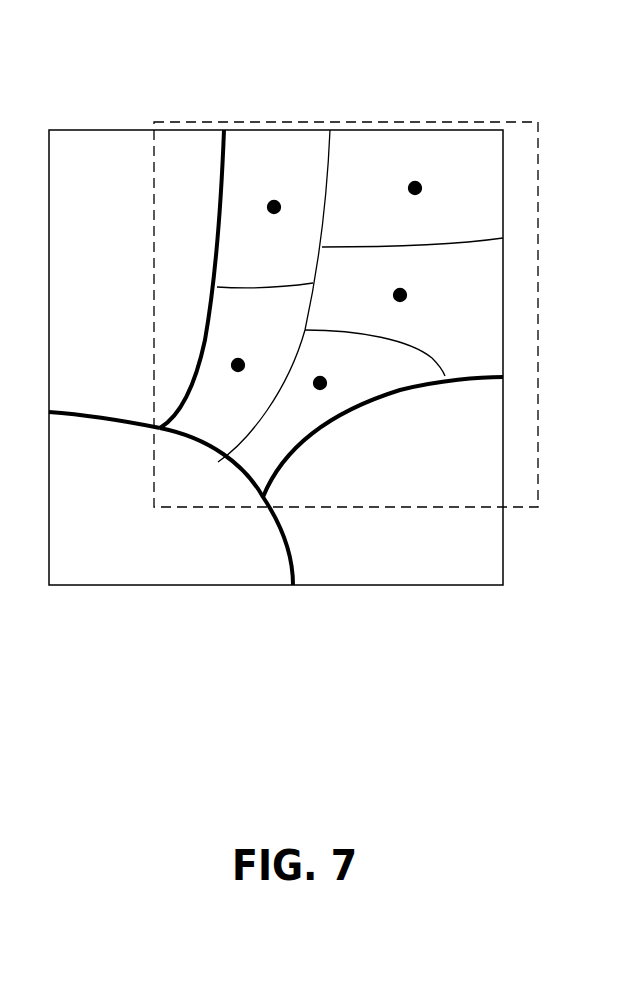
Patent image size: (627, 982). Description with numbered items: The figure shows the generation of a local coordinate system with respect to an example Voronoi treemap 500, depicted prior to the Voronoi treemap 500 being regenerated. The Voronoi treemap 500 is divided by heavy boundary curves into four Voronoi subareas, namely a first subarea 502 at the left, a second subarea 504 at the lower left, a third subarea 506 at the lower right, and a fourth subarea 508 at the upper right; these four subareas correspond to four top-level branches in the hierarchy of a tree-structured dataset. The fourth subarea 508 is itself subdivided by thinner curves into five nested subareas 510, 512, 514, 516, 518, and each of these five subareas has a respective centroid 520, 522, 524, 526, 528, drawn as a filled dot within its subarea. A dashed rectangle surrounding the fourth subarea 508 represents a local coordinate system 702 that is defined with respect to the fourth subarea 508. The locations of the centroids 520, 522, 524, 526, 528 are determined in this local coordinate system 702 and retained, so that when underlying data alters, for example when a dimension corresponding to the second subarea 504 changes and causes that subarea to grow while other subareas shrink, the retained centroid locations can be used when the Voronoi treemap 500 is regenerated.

The Voronoi treemap 500 is at (180, 82).
The first subarea 502 is at (145, 246).
The second subarea 504 is at (160, 528).
The third subarea 506 is at (415, 492).
The fourth subarea 508 is at (477, 140).
The subarea 510 is at (293, 186).
The subarea 512 is at (276, 334).
The subarea 514 is at (388, 230).
The subarea 516 is at (466, 326).
The subarea 518 is at (345, 360).
The centroid 520 is at (275, 213).
The centroid 522 is at (238, 371).
The centroid 524 is at (411, 185).
The centroid 526 is at (396, 292).
The centroid 528 is at (320, 389).
The local coordinate system 702 is at (520, 507).